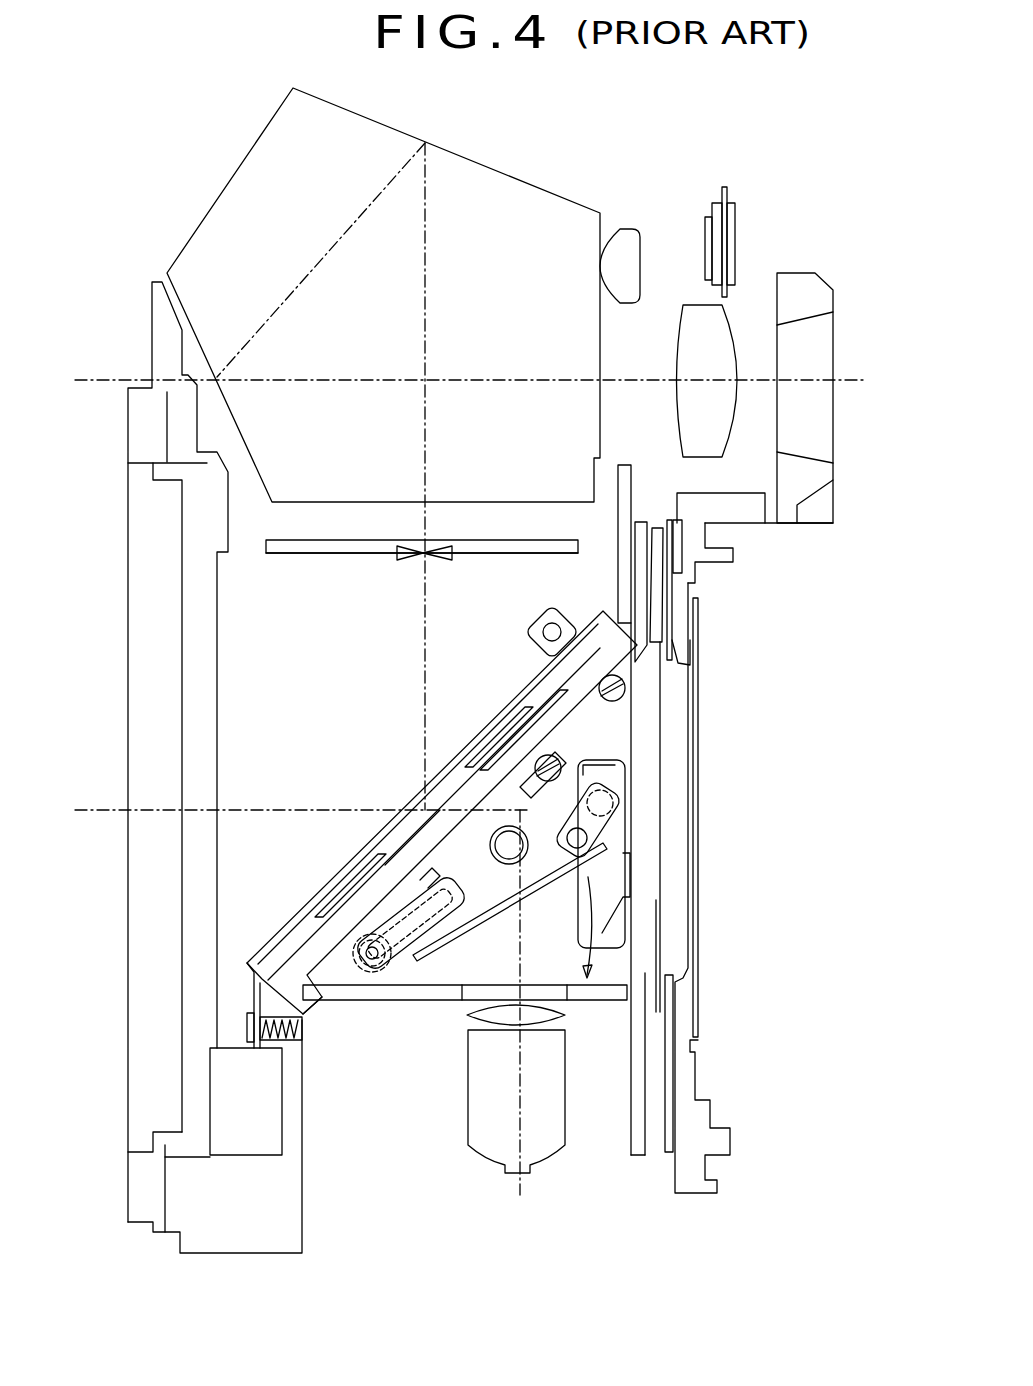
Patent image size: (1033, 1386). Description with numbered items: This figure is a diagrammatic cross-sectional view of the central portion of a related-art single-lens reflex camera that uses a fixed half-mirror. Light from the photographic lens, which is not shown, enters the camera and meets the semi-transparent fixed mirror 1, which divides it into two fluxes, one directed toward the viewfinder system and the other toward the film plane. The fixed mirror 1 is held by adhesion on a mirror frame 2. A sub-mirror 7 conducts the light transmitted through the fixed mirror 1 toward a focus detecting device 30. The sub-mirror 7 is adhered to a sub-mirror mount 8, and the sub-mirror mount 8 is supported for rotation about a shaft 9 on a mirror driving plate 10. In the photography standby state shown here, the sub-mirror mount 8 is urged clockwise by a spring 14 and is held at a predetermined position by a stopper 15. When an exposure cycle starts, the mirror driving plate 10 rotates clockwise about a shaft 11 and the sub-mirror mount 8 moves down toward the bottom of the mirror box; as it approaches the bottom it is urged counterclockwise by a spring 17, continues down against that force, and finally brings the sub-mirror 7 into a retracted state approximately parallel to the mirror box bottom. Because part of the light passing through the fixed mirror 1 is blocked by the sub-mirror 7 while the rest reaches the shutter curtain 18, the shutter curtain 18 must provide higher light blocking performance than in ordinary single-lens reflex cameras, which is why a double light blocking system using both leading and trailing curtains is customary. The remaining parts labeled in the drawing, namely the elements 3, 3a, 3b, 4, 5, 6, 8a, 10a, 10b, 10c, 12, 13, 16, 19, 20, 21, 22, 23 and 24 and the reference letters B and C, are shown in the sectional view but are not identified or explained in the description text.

The fixed mirror 1 is at (300, 917).
The mirror frame 2 is at (280, 967).
The mirror frame 3 is at (327, 883).
The mirror receiving portion 3a is at (497, 723).
The mirror frame lug 3b is at (543, 622).
The mirror box 4 is at (615, 700).
The stopper 5 is at (308, 1018).
The spring 6 is at (246, 1035).
The sub-mirror 7 is at (537, 703).
The sub-mirror mount 8 is at (620, 785).
The drive lever pin 8a is at (606, 812).
The shaft 9 is at (600, 877).
The mirror driving plate 10 is at (410, 992).
The lever arm 10a is at (445, 950).
The lever engaging portion 10b is at (428, 868).
The lever cam portion 10c is at (440, 960).
The shaft 11 is at (350, 985).
The bearing 12 is at (368, 1000).
The sub mirror 13 is at (412, 830).
The spring 14 is at (527, 893).
The stopper 15 is at (598, 748).
The guide member 16 is at (623, 933).
The spring 17 is at (627, 897).
The shutter curtain 18 is at (665, 688).
The shutter base plate 19 is at (660, 540).
The film 20 is at (700, 765).
The focusing screen 21 is at (297, 548).
The pentaprism 22 is at (482, 182).
The eyepiece lens 23 is at (730, 325).
The camera body 24 is at (128, 425).
The focus detecting device 30 is at (572, 1003).
The optical axis B is at (425, 626).
The center line C is at (487, 810).